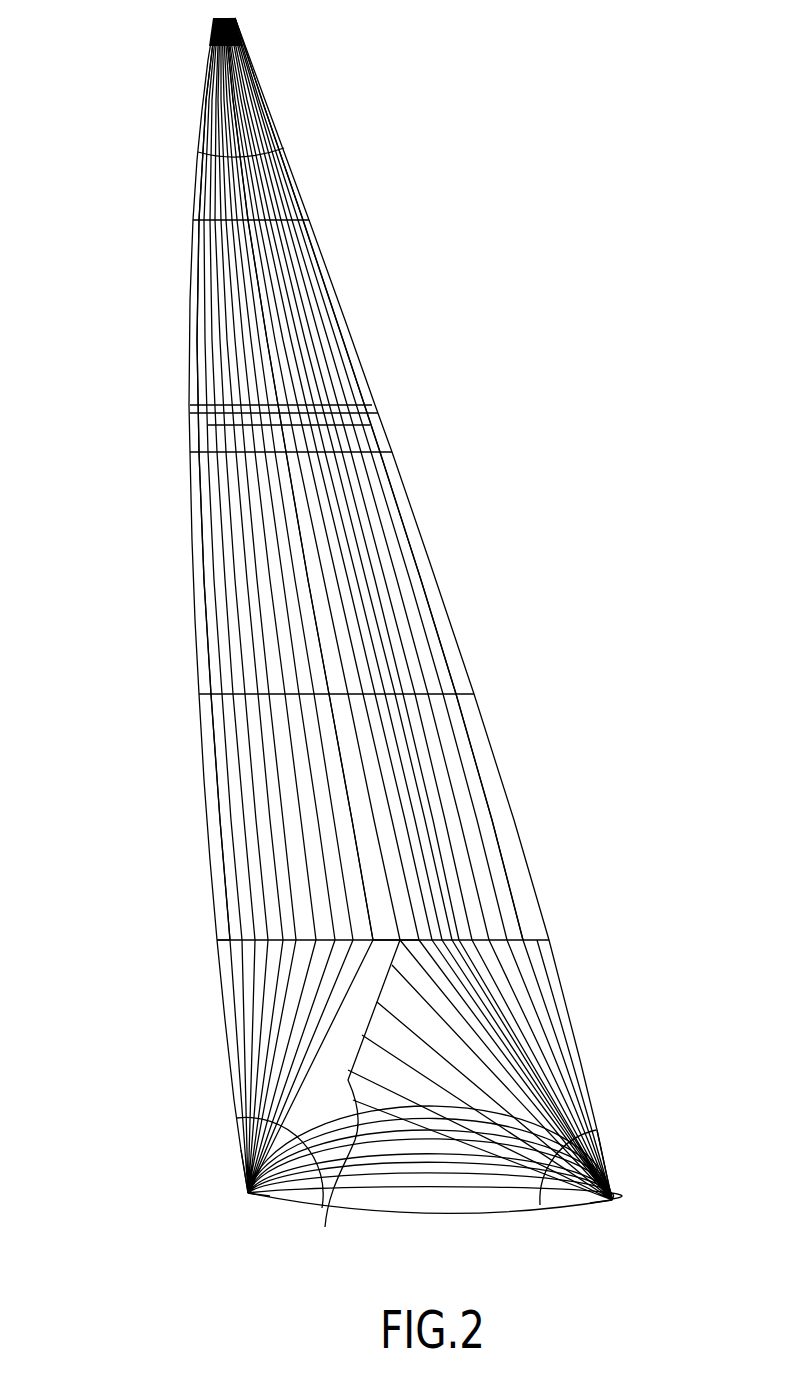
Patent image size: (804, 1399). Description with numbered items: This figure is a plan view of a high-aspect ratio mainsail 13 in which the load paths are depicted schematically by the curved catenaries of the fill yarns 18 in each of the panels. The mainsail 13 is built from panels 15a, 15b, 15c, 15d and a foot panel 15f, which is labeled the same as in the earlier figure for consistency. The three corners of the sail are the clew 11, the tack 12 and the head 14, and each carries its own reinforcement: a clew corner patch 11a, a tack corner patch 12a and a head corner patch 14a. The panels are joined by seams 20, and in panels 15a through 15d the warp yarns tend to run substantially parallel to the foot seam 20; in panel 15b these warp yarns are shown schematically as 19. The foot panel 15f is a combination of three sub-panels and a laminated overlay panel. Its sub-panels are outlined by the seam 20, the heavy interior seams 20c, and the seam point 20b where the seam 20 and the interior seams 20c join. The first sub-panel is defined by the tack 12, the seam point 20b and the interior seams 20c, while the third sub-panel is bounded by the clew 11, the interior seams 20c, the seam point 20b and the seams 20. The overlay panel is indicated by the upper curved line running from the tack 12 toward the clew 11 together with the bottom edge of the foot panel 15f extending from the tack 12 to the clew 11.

The clew 11 is at (622, 1204).
The clew corner patch 11a is at (590, 1163).
The tack 12 is at (243, 1200).
The tack corner patch 12a is at (247, 1138).
The mainsail 13 is at (155, 540).
The head 14 is at (200, 17).
The head corner patch 14a is at (265, 97).
The panel 15a is at (306, 152).
The panel 15b is at (403, 368).
The panel 15c is at (465, 577).
The panel 15d is at (538, 795).
The foot panel 15f is at (618, 1070).
The fill yarns 18 is at (314, 250).
The warp yarns 19 is at (372, 405).
The seam 20 is at (311, 220).
The seam point 20b is at (400, 940).
The interior seams 20c is at (600, 1003).